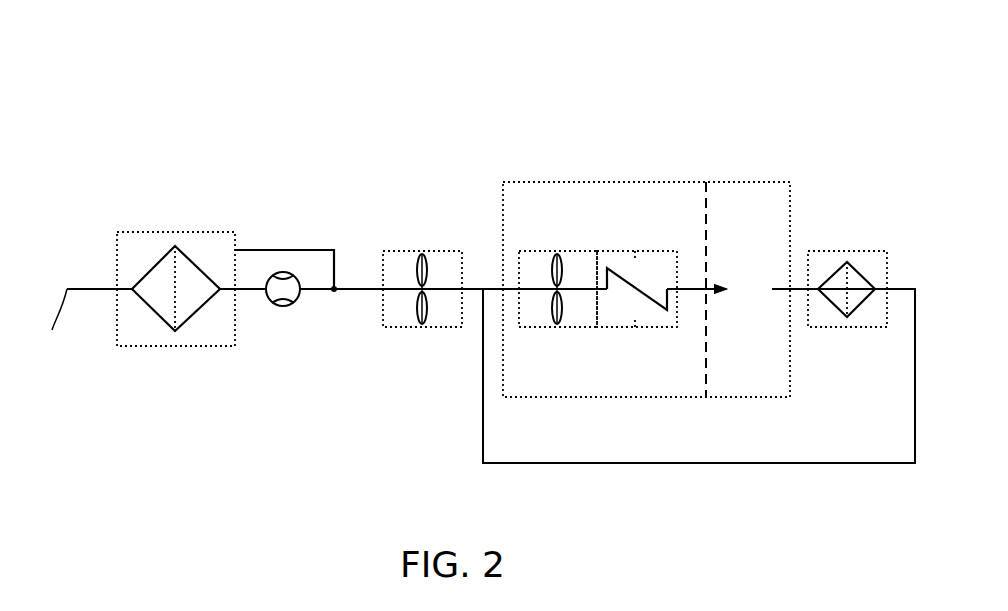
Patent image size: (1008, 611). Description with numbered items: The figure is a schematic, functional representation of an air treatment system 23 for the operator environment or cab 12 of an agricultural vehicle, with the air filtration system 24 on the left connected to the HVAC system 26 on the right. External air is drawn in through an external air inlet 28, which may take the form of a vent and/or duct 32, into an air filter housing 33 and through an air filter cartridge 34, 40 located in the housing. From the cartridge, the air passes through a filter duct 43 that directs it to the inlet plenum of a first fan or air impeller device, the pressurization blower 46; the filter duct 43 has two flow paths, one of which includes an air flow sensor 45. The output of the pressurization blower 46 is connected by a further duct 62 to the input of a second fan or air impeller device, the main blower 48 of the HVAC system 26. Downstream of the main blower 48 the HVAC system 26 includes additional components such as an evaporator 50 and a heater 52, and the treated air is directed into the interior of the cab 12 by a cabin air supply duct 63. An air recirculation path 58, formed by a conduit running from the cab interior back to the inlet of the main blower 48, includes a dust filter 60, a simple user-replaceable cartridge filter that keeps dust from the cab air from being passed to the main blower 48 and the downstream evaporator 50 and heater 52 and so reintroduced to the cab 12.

The cab 12 is at (778, 217).
The air treatment system 23 is at (415, 122).
The air filtration system 24 is at (148, 195).
The HVAC system 26 is at (634, 165).
The external air inlet 28 is at (42, 326).
The vent and/or duct 32 is at (98, 289).
The air filter housing 33 is at (197, 232).
The air filter cartridge 34 is at (170, 323).
The air filter cartridge 40 is at (176, 288).
The filter duct 43 is at (263, 247).
The air flow sensor 45 is at (292, 293).
The pressurization blower 46 is at (390, 270).
The main blower 48 is at (537, 267).
The evaporator 50 is at (625, 265).
The heater 52 is at (663, 265).
The air recirculation path 58 is at (915, 413).
The dust filter 60 is at (857, 263).
The further duct 62 is at (490, 287).
The cabin air supply duct 63 is at (707, 280).